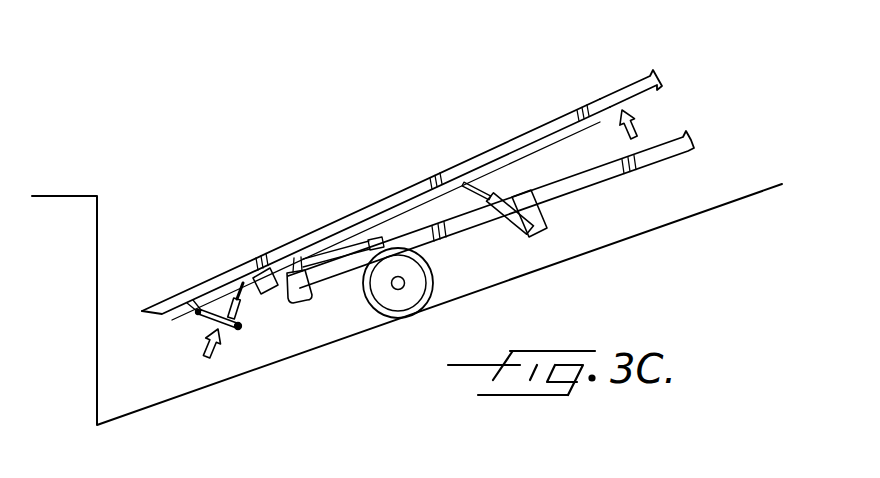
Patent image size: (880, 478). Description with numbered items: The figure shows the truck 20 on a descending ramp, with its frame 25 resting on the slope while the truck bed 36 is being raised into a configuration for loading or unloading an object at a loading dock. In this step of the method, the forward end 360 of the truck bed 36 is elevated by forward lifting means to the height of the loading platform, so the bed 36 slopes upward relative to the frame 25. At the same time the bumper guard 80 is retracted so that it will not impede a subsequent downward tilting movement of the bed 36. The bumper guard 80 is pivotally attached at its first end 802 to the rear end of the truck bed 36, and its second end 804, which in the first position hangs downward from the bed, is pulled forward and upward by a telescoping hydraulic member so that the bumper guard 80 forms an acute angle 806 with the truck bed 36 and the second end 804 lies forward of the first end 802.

The truck 20 is at (708, 117).
The frame 25 is at (598, 174).
The truck bed 36 is at (465, 159).
The forward end of the truck bed 360 is at (612, 90).
The bumper guard 80 is at (204, 326).
The first end of the bumper guard 802 is at (199, 305).
The second end of the bumper guard 804 is at (234, 342).
The acute angle 806 is at (225, 236).